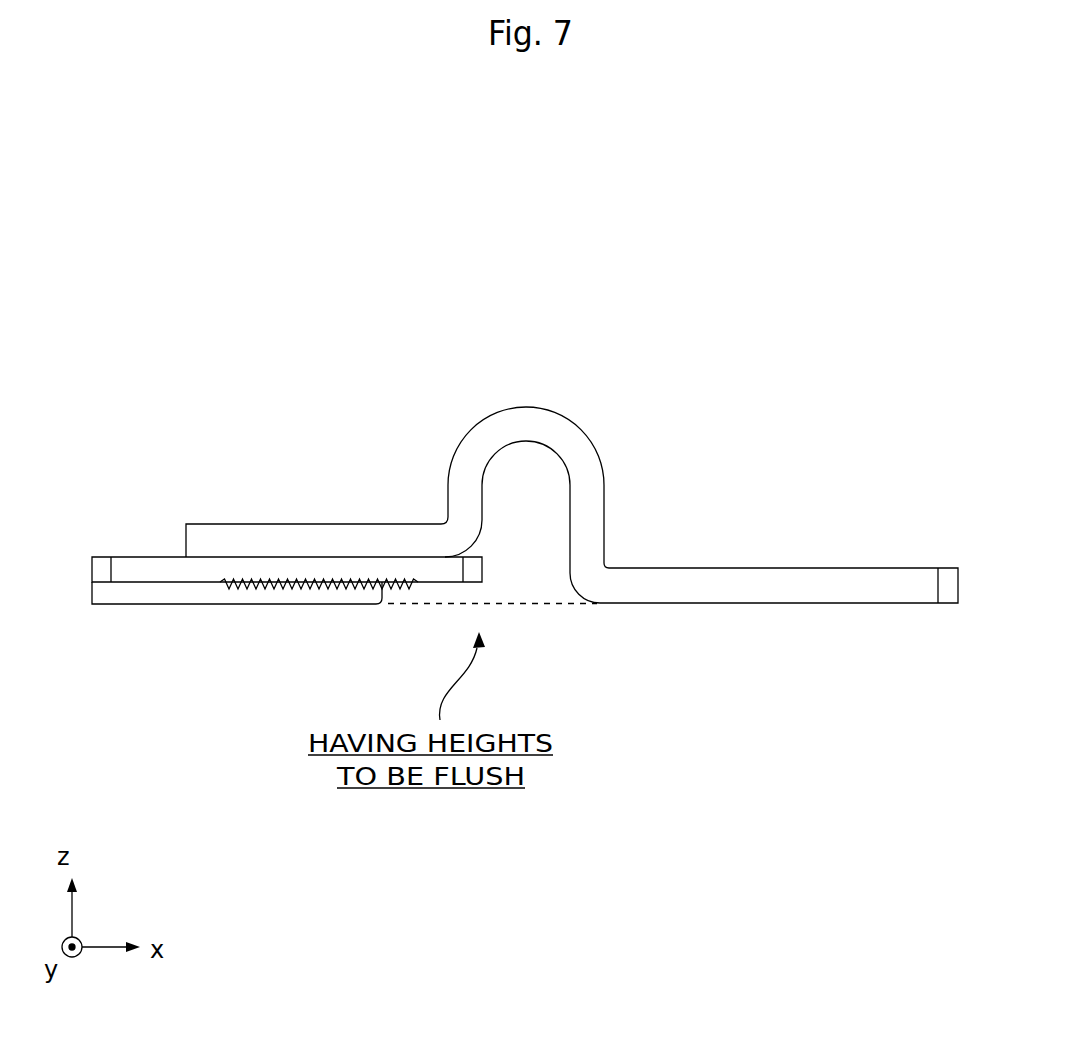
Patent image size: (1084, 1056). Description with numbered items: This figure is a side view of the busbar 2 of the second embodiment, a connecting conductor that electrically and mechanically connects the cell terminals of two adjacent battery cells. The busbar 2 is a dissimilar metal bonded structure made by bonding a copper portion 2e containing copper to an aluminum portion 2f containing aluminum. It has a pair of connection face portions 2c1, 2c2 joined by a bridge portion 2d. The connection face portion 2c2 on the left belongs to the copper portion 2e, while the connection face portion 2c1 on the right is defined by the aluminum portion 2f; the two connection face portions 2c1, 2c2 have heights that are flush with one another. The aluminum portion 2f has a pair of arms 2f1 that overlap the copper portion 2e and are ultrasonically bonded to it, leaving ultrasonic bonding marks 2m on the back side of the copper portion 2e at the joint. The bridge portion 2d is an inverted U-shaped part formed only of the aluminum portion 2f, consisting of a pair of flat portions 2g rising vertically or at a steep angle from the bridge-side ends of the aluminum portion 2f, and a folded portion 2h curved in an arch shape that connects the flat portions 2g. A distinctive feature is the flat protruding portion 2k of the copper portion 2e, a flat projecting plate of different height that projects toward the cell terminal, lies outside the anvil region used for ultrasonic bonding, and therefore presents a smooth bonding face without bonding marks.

The busbar 2 is at (267, 258).
The connection face portion 2c1 is at (841, 500).
The connection face portion 2c2 is at (202, 408).
The bridge portion 2d is at (574, 406).
The copper portion 2e is at (137, 541).
The aluminum portion 2f is at (706, 548).
The arm 2f1 is at (345, 524).
The flat portion 2g is at (467, 493).
The folded portion 2h is at (518, 407).
The flat protruding portion 2k is at (183, 604).
The ultrasonic bonding mark 2m is at (272, 583).